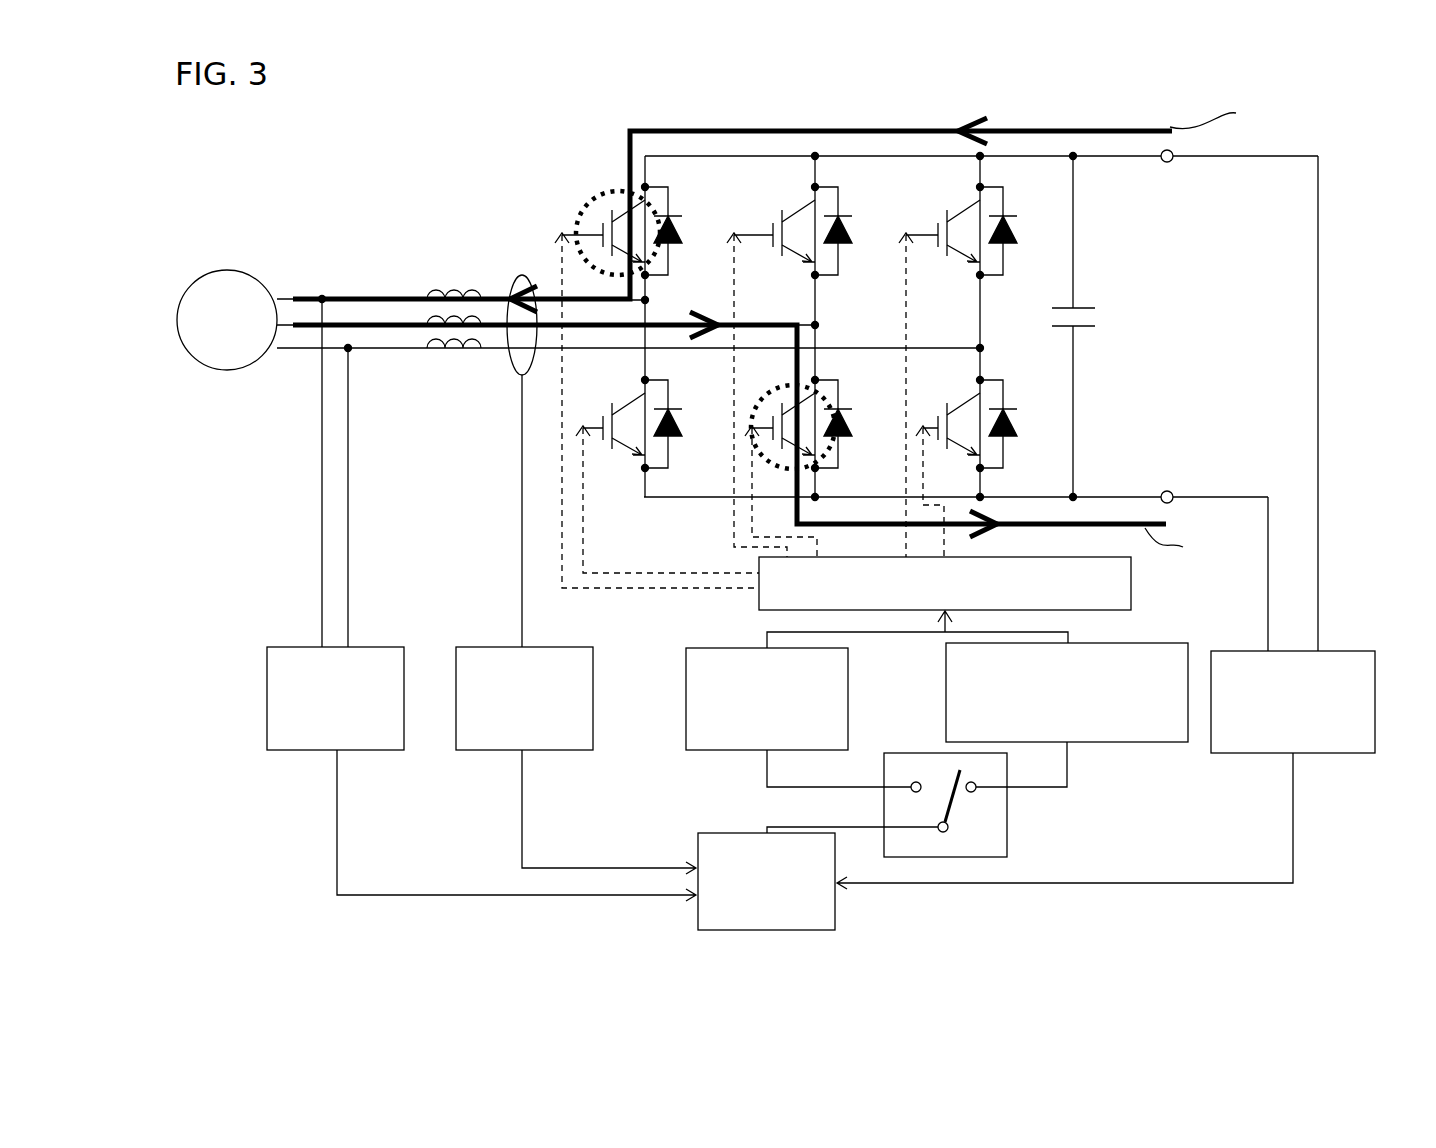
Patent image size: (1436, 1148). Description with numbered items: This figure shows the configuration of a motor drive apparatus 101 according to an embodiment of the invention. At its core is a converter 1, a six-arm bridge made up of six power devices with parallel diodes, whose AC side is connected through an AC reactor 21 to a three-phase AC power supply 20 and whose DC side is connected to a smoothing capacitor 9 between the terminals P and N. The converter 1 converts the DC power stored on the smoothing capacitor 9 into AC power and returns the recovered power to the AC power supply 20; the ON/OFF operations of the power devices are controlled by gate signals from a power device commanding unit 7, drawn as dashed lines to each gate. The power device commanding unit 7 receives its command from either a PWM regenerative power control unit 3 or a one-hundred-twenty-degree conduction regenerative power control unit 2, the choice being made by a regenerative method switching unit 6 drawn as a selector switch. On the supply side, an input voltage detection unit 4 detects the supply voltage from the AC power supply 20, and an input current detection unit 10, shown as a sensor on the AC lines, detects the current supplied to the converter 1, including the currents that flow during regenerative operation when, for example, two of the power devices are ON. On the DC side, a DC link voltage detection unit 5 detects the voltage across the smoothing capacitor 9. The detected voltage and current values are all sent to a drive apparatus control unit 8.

The converter 1 is at (1031, 120).
The 120-degree conduction regenerative power control unit 2 is at (1140, 643).
The PWM regenerative power control unit 3 is at (848, 708).
The input voltage detection unit 4 is at (378, 647).
The DC link voltage detection unit 5 is at (1345, 651).
The regenerative method switching unit 6 is at (885, 751).
The power device commanding unit 7 is at (1131, 582).
The drive apparatus control unit 8 is at (712, 833).
The smoothing capacitor 9 is at (1098, 320).
The input current detection unit 10 is at (595, 700).
The AC power supply 20 is at (260, 271).
The AC reactor 21 is at (457, 284).
The motor drive apparatus 101 is at (1082, 108).